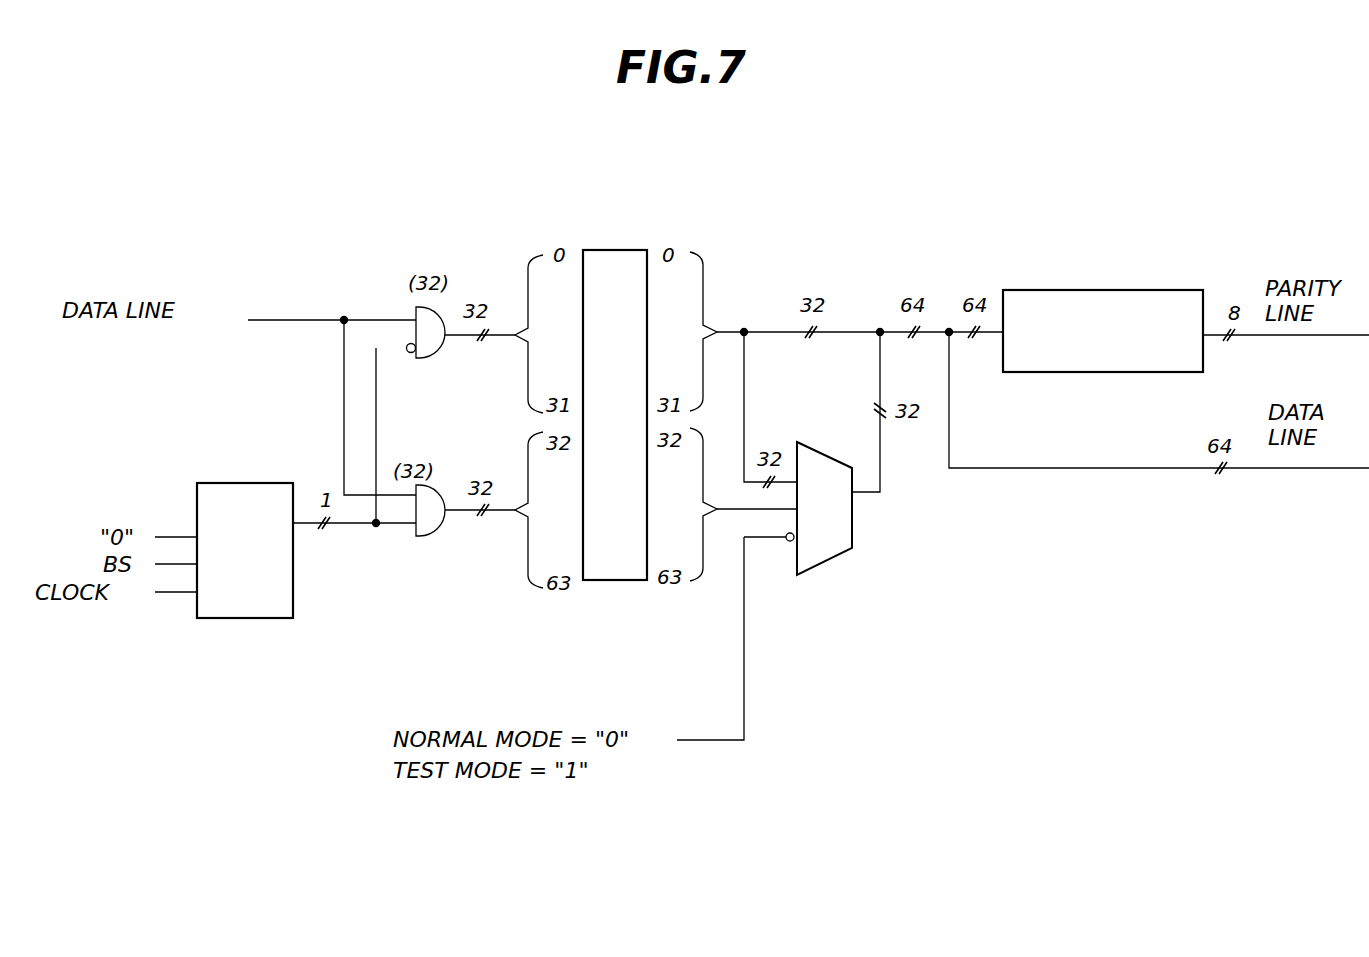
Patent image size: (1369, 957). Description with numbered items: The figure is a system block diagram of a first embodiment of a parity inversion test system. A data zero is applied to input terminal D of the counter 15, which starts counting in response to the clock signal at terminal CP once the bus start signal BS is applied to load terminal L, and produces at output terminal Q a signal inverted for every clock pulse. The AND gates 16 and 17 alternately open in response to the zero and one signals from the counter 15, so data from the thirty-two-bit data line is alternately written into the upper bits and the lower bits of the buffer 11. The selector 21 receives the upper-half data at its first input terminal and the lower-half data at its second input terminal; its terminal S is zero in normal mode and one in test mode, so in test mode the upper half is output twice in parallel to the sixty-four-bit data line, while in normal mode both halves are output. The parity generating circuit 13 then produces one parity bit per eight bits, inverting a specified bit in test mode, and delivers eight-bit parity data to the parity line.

The buffer 11 is at (595, 250).
The parity generating circuit 13 is at (1090, 290).
The 2-bit counter 15 is at (213, 483).
The AND gate 16 is at (416, 307).
The AND gate 17 is at (428, 538).
The selector 21 is at (826, 576).